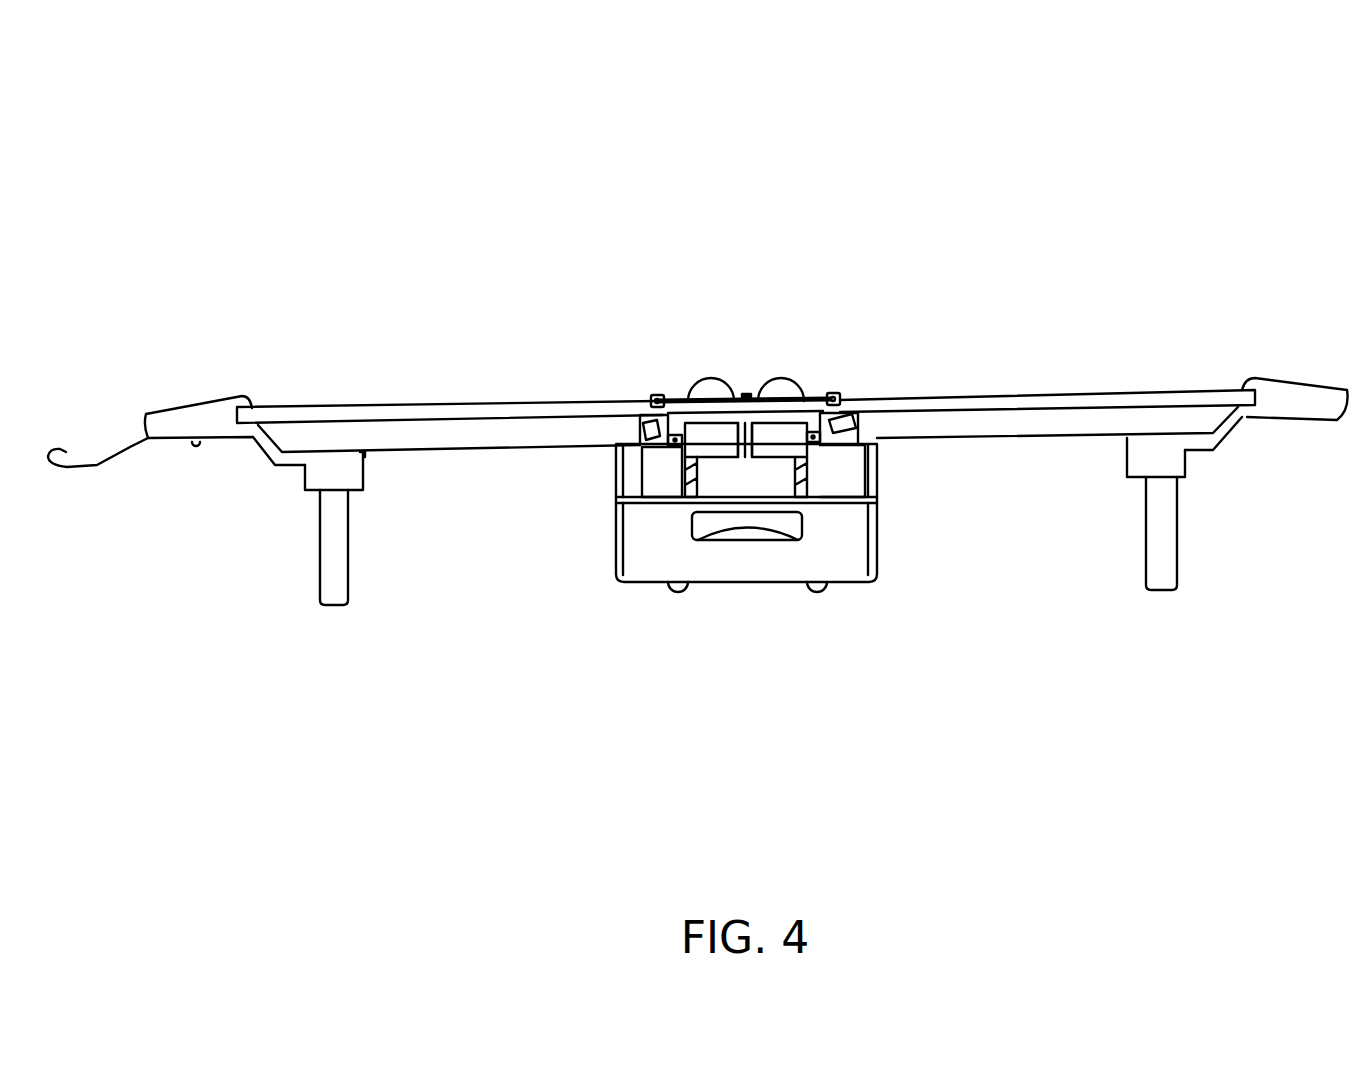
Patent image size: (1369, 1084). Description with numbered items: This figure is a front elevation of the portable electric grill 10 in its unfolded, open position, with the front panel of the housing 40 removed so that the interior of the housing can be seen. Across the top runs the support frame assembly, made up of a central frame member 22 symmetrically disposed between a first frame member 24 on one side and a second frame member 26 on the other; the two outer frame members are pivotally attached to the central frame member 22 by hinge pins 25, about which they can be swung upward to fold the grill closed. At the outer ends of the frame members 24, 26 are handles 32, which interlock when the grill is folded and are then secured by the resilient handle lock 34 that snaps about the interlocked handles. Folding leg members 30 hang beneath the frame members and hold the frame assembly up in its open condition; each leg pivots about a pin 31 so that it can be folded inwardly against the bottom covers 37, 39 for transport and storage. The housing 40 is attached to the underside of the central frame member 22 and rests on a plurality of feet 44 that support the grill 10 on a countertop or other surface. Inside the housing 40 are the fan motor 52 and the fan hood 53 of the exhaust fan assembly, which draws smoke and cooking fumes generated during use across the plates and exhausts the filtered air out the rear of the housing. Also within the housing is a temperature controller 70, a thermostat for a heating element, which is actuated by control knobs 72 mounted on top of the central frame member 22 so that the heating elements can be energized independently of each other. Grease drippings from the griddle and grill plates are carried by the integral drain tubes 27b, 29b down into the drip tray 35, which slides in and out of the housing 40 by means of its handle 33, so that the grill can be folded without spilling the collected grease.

The grill 10 is at (632, 160).
The central frame member 22 is at (815, 398).
The first frame member 24 is at (338, 413).
The hinge pins 25 is at (658, 397).
The second frame member 26 is at (1037, 400).
The drain tube 27b is at (647, 425).
The drain tube 29b is at (848, 420).
The leg members 30 is at (332, 573).
The pins 31 is at (331, 472).
The handles 32 is at (197, 413).
The handle 33 is at (713, 525).
The handle lock 34 is at (85, 467).
The drip tray 35 is at (850, 563).
The bottom cover 37 is at (428, 440).
The bottom cover 39 is at (910, 427).
The housing 40 is at (617, 565).
The feet 44 is at (682, 595).
The fan motor 52 is at (630, 473).
The fan hood 53 is at (775, 489).
The temperature controller 70 is at (702, 448).
The control knobs 72 is at (787, 388).